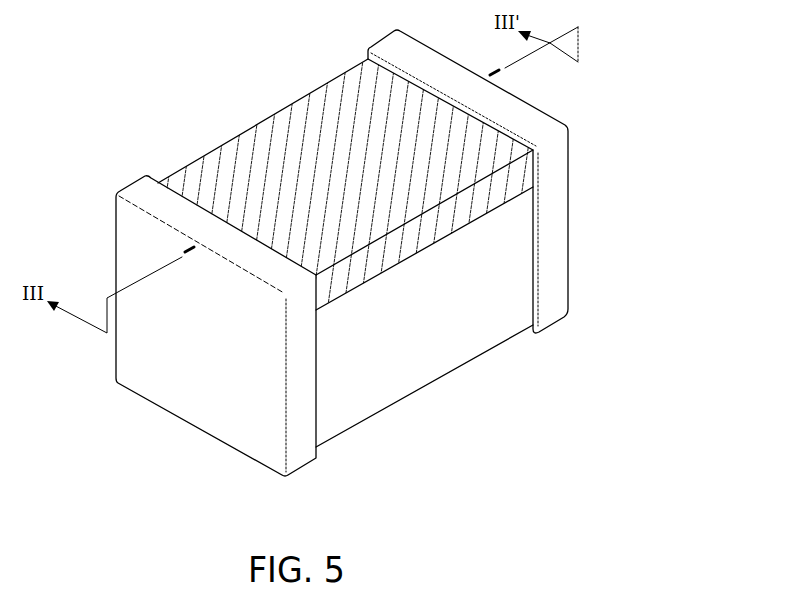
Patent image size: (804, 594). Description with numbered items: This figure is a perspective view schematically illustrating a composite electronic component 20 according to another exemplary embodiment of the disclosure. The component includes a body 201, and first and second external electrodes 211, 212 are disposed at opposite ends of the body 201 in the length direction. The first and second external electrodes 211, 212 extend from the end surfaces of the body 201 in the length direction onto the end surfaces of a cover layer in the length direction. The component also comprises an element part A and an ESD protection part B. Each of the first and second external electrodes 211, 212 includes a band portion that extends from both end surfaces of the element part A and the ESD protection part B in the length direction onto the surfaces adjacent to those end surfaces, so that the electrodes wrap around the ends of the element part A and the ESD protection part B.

The composite electronic component 20 is at (229, 36).
The body 201 is at (460, 323).
The first external electrode 211 is at (300, 435).
The second external electrode 212 is at (552, 292).
The element part A is at (352, 390).
The ESD protection part B is at (375, 266).